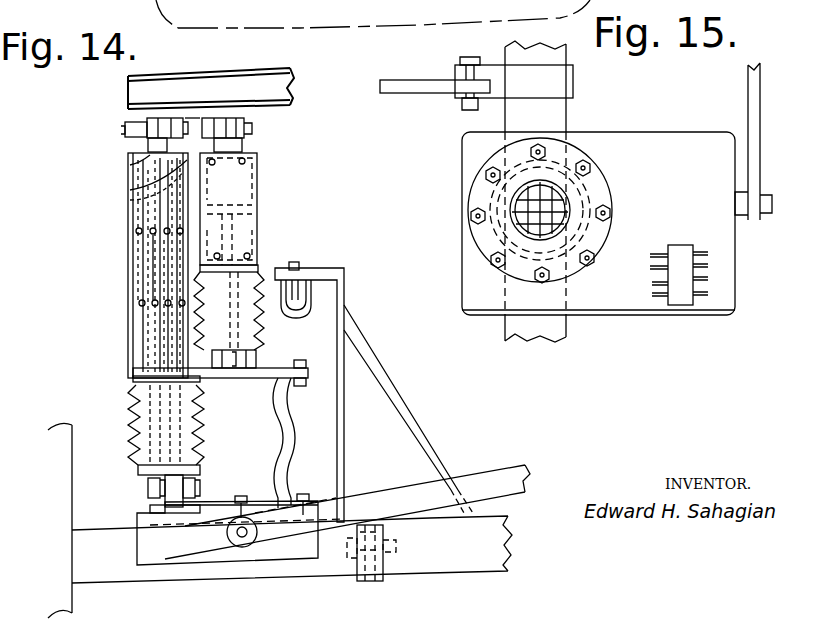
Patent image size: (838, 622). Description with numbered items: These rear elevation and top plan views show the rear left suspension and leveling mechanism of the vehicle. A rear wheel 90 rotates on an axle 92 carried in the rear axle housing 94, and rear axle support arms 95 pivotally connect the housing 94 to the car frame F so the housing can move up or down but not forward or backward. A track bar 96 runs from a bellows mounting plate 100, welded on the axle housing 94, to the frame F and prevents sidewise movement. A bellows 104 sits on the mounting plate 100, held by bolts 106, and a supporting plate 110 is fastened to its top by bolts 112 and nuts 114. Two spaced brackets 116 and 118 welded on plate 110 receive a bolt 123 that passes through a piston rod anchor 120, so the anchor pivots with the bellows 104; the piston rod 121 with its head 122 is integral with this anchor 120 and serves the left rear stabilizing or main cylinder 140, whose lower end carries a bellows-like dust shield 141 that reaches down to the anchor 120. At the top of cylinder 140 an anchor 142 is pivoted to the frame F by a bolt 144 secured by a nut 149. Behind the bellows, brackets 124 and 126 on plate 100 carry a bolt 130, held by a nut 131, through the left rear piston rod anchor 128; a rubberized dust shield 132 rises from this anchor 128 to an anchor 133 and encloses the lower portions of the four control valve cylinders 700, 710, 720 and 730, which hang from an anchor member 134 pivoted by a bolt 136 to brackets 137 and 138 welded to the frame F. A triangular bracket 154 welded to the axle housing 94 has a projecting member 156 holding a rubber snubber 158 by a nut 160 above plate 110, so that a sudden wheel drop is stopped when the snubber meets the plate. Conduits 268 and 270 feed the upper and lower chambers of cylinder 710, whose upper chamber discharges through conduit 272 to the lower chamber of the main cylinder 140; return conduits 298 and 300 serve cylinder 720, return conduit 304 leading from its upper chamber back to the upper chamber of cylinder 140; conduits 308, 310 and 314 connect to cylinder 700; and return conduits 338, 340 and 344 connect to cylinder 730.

In FIG. 14, the car frame F is at (276, 70).
In FIG. 14, the rear wheel 90 is at (72, 468).
In FIG. 15, the axle 92 is at (553, 123).
In FIG. 14, the rear axle housing 94 is at (122, 584).
In FIG. 15, the rear axle housing 94 is at (565, 95).
In FIG. 14, the rear axle support arm 95 is at (356, 572).
In FIG. 15, the rear axle support arm 95 is at (407, 78).
In FIG. 14, the track bar 96 is at (470, 480).
In FIG. 15, the track bar 96 is at (747, 97).
In FIG. 14, the bellows mounting plate 100 is at (140, 520).
In FIG. 15, the bellows mounting plate 100 is at (617, 130).
In FIG. 14, the bellows 104 is at (292, 418).
In FIG. 15, the bellows 104 is at (482, 222).
In FIG. 14, the bolts 106 is at (243, 497).
In FIG. 14, the supporting plate 110 is at (278, 368).
In FIG. 15, the supporting plate 110 is at (478, 250).
In FIG. 14, the bolts 112 is at (302, 360).
In FIG. 15, the bolts 112 is at (590, 166).
In FIG. 14, the nuts 114 is at (305, 384).
In FIG. 14, the bracket 116 is at (226, 376).
In FIG. 14, the bracket 118 is at (250, 355).
In FIG. 14, the piston rod anchor 120 is at (252, 348).
In FIG. 14, the piston rod 121 is at (240, 235).
In FIG. 14, the head 122 is at (252, 204).
In FIG. 14, the bolt 123 is at (218, 378).
In FIG. 14, the bracket 124 is at (150, 507).
In FIG. 14, the bracket 126 is at (198, 500).
In FIG. 14, the left rear piston rod anchor 128 is at (138, 478).
In FIG. 14, the bolt 130 is at (148, 490).
In FIG. 14, the nut 131 is at (190, 488).
In FIG. 14, the dust shield 132 is at (130, 442).
In FIG. 14, the anchor 133 is at (133, 380).
In FIG. 14, the anchor member 134 is at (150, 147).
In FIG. 15, the anchor member 134 is at (680, 245).
In FIG. 14, the bolt 136 is at (193, 124).
In FIG. 14, the bracket 137 is at (138, 124).
In FIG. 14, the bracket 138 is at (169, 122).
In FIG. 14, the left rear stabilizing cylinder 140 is at (258, 154).
In FIG. 15, the left rear stabilizing cylinder 140 is at (550, 193).
In FIG. 14, the bellows-like dust shield 141 is at (262, 275).
In FIG. 14, the anchor 142 is at (238, 122).
In FIG. 14, the bolt 144 is at (226, 120).
In FIG. 14, the nut 149 is at (255, 122).
In FIG. 14, the triangular bracket 154 is at (383, 372).
In FIG. 14, the projecting member 156 is at (330, 268).
In FIG. 14, the rubber snubber 158 is at (304, 312).
In FIG. 14, the nut 160 is at (297, 262).
In FIG. 14, the conduit 268 is at (150, 239).
In FIG. 15, the conduit 268 is at (708, 279).
In FIG. 14, the conduit 270 is at (155, 300).
In FIG. 15, the conduit 272 is at (652, 284).
In FIG. 14, the return conduit 298 is at (167, 228).
In FIG. 15, the return conduit 298 is at (708, 266).
In FIG. 14, the return conduit 300 is at (168, 300).
In FIG. 15, the return conduit 304 is at (650, 268).
In FIG. 14, the conduit 308 is at (136, 232).
In FIG. 15, the conduit 308 is at (708, 296).
In FIG. 14, the conduit 310 is at (142, 306).
In FIG. 15, the conduit 314 is at (650, 294).
In FIG. 14, the return conduit 338 is at (180, 228).
In FIG. 15, the return conduit 338 is at (702, 252).
In FIG. 14, the return conduit 340 is at (182, 300).
In FIG. 15, the return conduit 344 is at (658, 254).
In FIG. 14, the control valve cylinder 700 is at (128, 172).
In FIG. 14, the control valve cylinder 710 is at (134, 185).
In FIG. 14, the control valve cylinder 720 is at (172, 185).
In FIG. 14, the control valve cylinder 730 is at (188, 170).